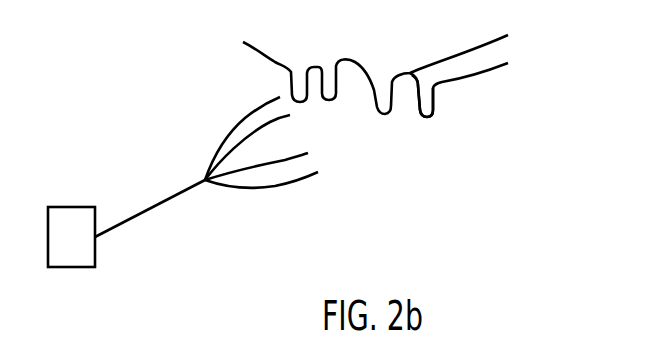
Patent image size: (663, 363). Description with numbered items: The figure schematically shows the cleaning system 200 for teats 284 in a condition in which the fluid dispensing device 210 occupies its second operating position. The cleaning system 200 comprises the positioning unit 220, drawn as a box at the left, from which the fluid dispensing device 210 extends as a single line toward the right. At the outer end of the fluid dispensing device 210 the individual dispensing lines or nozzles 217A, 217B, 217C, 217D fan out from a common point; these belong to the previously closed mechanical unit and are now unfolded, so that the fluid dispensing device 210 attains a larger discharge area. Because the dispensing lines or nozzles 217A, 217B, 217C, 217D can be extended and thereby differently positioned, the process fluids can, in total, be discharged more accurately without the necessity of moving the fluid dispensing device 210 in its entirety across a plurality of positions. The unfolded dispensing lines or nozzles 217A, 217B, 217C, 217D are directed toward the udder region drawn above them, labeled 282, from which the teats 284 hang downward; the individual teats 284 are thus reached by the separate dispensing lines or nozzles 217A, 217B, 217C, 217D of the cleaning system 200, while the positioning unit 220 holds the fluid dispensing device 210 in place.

The cleaning system 200 is at (98, 167).
The fluid dispensing device 210 is at (184, 202).
The dispensing line or nozzle 217A is at (242, 118).
The dispensing line or nozzle 217B is at (288, 119).
The dispensing line or nozzle 217C is at (302, 158).
The dispensing line or nozzle 217D is at (296, 183).
The positioning unit 220 is at (63, 207).
The nerve 282 is at (519, 51).
The teats 284 is at (450, 113).